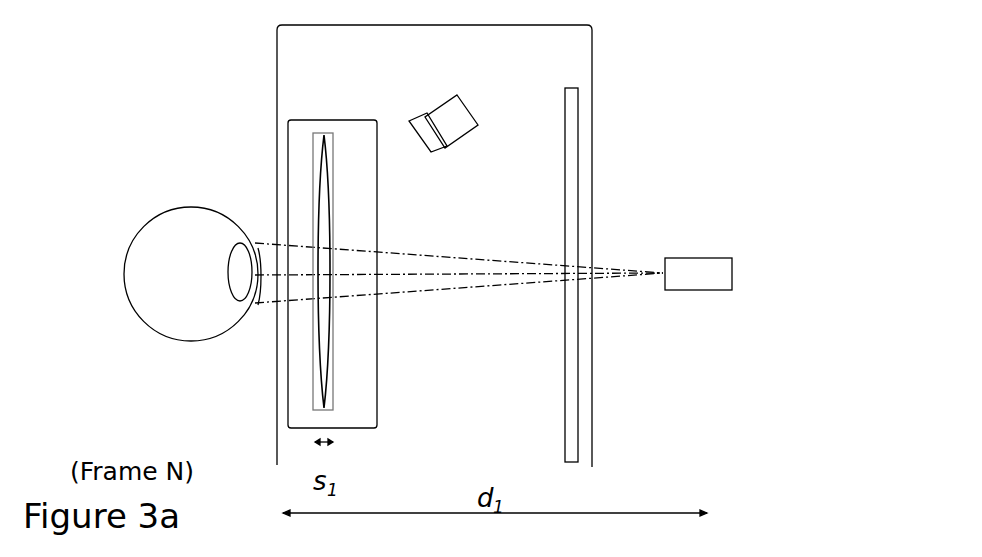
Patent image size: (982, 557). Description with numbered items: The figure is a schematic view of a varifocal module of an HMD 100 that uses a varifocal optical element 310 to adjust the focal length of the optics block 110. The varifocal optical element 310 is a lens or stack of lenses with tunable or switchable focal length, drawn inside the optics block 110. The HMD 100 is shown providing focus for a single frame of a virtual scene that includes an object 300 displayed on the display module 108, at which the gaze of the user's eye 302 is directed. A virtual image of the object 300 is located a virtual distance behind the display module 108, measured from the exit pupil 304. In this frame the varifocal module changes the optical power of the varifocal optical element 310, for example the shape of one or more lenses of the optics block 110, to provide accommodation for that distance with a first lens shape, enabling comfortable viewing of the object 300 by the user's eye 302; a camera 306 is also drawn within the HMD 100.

The HMD 100 is at (597, 27).
The display module 108 is at (578, 110).
The optics block 110 is at (377, 378).
The object 300 is at (697, 258).
The user's eye 302 is at (131, 238).
The exit pupil 304 is at (262, 321).
The eye tracking camera 306 is at (455, 95).
The varifocal optical element 310 is at (323, 127).